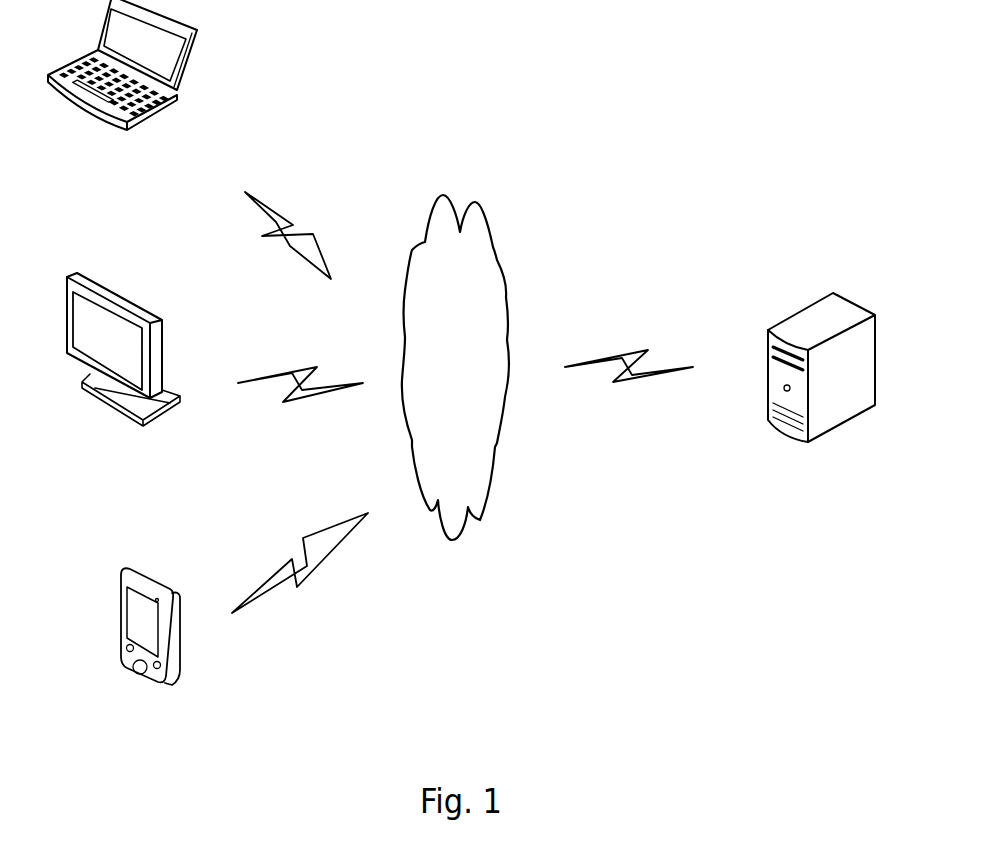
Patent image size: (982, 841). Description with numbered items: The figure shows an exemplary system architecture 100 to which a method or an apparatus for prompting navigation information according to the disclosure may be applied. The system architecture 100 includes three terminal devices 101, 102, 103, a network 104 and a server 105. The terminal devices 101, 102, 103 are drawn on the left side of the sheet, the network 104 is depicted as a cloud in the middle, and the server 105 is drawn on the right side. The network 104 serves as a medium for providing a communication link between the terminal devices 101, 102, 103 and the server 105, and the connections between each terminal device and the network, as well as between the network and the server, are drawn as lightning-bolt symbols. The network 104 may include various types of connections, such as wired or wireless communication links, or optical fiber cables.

The system architecture 100 is at (621, 93).
The terminal device 101 is at (150, 647).
The terminal device 102 is at (123, 367).
The terminal device 103 is at (122, 86).
The network 104 is at (455, 367).
The server 105 is at (821, 391).